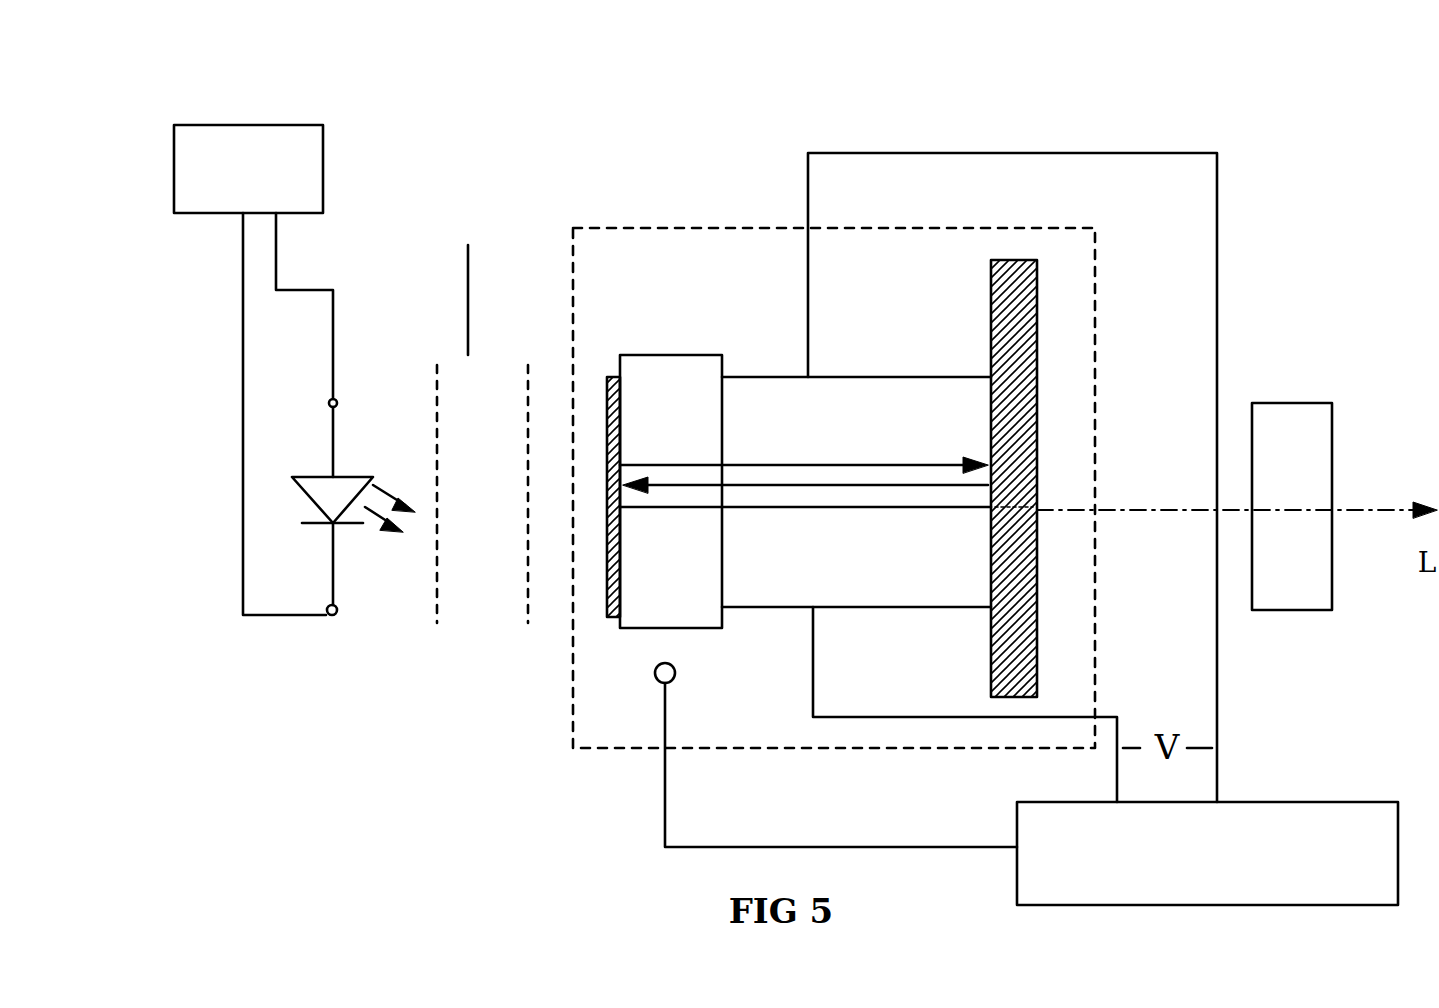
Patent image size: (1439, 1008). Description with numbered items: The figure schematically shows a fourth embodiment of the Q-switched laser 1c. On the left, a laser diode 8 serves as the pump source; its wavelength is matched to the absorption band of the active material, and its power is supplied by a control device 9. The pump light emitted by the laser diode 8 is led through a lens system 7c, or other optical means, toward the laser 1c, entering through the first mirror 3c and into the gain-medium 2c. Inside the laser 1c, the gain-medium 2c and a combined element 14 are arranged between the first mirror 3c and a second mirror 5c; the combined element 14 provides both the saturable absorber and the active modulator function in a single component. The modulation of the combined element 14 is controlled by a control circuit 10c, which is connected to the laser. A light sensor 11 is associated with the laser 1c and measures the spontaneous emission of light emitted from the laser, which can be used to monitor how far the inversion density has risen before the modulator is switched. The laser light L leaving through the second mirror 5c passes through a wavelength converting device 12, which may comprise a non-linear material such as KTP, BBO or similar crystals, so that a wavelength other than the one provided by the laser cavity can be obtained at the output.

The control device 9 is at (229, 125).
The laser diode 8 is at (348, 538).
The optical filter 7c is at (482, 413).
The laser 1c is at (572, 290).
The gain-medium 2c is at (652, 355).
The first mirror 3c is at (607, 594).
The combined element 14 is at (752, 377).
The second mirror 5c is at (1037, 345).
The light sensor 11 is at (836, 752).
The control circuit 10c is at (1277, 802).
The wavelength converting device 12 is at (1298, 403).